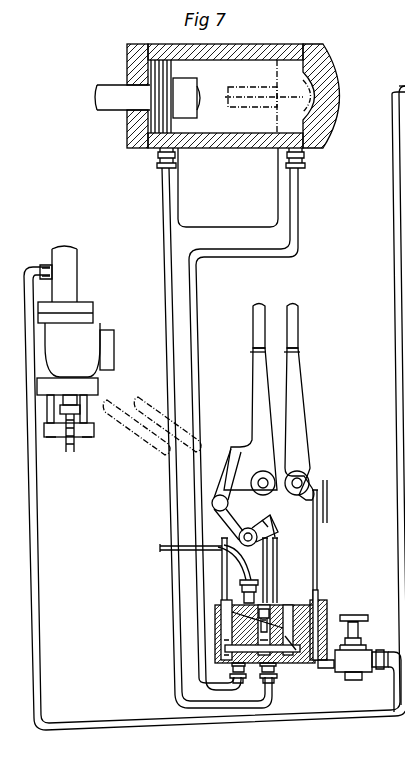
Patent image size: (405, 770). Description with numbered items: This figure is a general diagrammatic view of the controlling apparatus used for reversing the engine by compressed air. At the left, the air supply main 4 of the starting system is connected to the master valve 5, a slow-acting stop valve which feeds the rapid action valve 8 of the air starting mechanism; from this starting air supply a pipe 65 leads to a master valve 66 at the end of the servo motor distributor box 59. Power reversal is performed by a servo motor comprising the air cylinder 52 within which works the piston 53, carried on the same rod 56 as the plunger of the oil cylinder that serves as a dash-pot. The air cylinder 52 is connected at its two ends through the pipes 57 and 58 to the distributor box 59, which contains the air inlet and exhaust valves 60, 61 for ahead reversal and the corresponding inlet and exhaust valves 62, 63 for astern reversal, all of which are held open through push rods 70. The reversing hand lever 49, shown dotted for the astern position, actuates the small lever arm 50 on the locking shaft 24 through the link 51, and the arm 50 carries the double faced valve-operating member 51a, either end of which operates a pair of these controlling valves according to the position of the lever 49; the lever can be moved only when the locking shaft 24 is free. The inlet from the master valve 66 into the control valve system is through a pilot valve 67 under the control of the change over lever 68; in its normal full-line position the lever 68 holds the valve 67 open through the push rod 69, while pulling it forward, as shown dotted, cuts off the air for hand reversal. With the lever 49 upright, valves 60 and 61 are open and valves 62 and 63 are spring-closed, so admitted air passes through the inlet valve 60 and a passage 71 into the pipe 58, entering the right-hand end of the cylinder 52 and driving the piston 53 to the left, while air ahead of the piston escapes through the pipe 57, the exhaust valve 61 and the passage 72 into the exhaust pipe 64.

The air supply main 4 is at (74, 276).
The master valve 5 is at (75, 387).
The rapid action valve 8 is at (398, 54).
The locking shaft 24 is at (268, 522).
The reversing hand lever 49 is at (261, 380).
The small lever arm 50 is at (232, 522).
The link 51 is at (218, 482).
The double faced valve-operating member 51a is at (275, 530).
The air cylinder 52 is at (230, 120).
The piston 53 is at (157, 118).
The rod 56 is at (115, 107).
The pipe 57 is at (163, 188).
The pipe 58 is at (299, 180).
The servo motor distributor box 59 is at (324, 614).
The air inlet valve 60 is at (286, 643).
The exhaust valve 61 is at (270, 612).
The inlet valve 62 is at (224, 620).
The exhaust valve 63 is at (216, 643).
The exhaust pipe 64 is at (161, 548).
The pipe 65 is at (349, 724).
The master valve 66 is at (350, 652).
The pilot valve 67 is at (322, 658).
The change over lever 68 is at (299, 392).
The push rod 69 is at (318, 519).
The push rods 70 is at (234, 568).
The passage 71 is at (232, 650).
The passage 72 is at (262, 678).